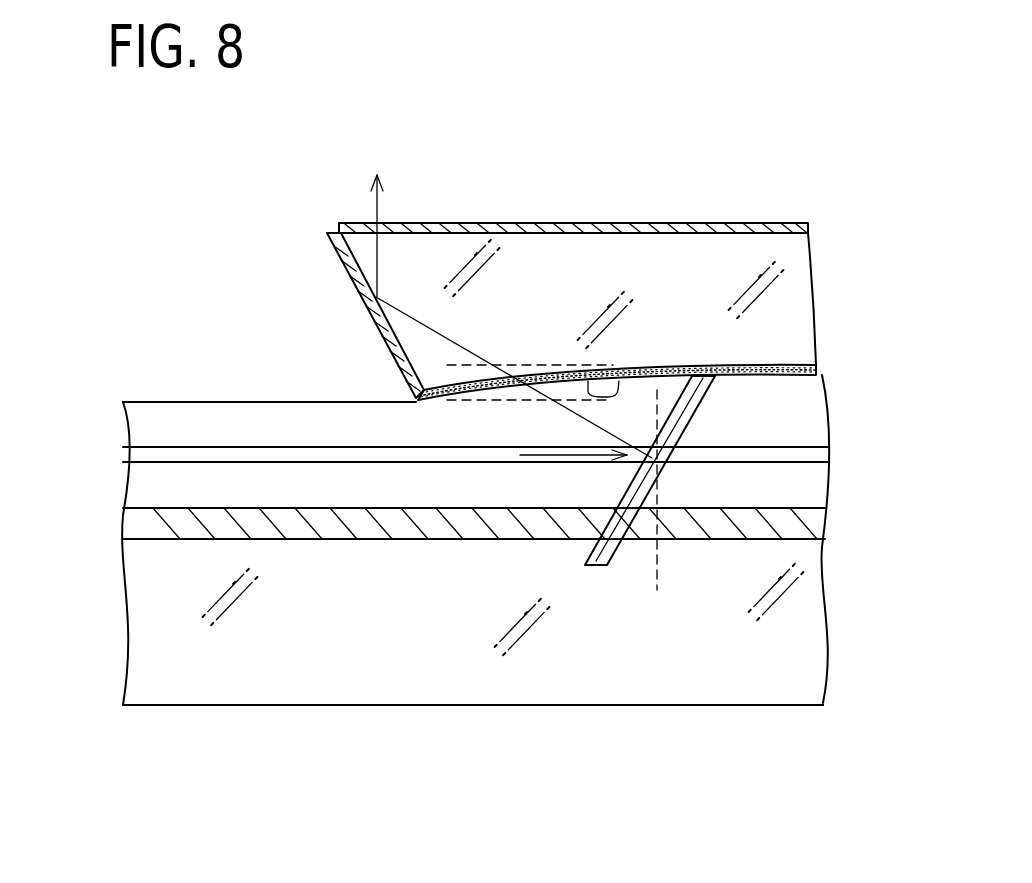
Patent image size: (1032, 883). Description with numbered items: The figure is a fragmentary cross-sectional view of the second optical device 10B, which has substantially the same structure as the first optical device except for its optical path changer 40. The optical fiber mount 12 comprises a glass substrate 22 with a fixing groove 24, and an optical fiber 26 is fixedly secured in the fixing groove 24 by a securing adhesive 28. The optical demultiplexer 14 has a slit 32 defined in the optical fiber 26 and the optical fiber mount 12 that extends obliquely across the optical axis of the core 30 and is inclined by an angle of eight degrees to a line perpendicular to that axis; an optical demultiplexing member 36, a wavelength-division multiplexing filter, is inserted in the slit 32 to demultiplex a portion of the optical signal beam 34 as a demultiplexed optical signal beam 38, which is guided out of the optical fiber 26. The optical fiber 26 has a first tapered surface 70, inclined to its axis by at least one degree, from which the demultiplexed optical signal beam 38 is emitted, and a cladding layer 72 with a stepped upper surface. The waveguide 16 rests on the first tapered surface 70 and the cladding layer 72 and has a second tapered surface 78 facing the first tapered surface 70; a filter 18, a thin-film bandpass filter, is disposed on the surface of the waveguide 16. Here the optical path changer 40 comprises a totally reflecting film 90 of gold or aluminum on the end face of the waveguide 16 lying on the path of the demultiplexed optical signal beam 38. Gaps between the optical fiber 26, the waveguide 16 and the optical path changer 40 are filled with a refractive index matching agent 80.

The second optical device 10B is at (186, 183).
The optical fiber mount 12 is at (836, 658).
The optical demultiplexer 14 is at (686, 480).
The waveguide 16 is at (640, 246).
The filter 18 is at (556, 222).
The glass substrate 22 is at (787, 690).
The fixing groove 24 is at (160, 538).
The optical fiber 26 is at (824, 372).
The securing adhesive 28 is at (330, 528).
The core 30 is at (806, 447).
The slit 32 is at (640, 488).
The optical signal beam 34 is at (536, 457).
The optical demultiplexing member 36 is at (688, 405).
The demultiplexed optical signal beam 38 is at (379, 256).
The optical path changer 40 is at (370, 310).
The first tapered surface 70 is at (552, 372).
The cladding layer 72 is at (811, 397).
The second tapered surface 78 is at (437, 403).
The refractive index matching agent 80 is at (507, 395).
The totally reflecting film 90 is at (336, 258).